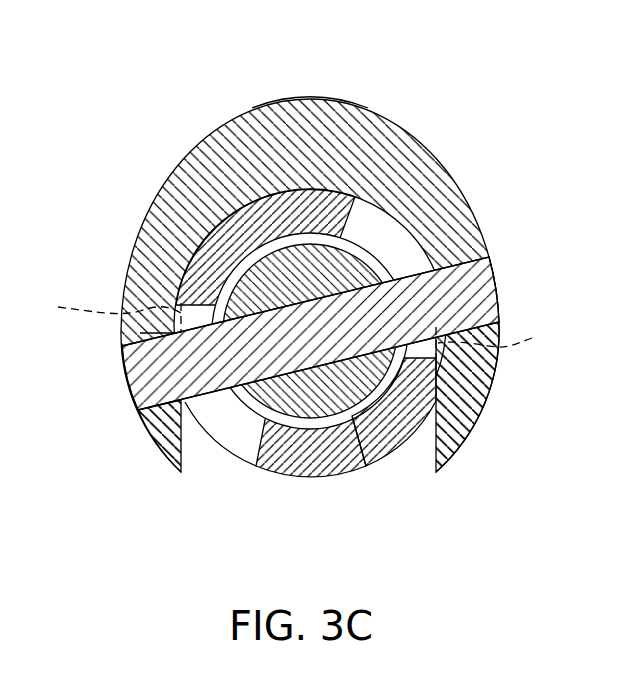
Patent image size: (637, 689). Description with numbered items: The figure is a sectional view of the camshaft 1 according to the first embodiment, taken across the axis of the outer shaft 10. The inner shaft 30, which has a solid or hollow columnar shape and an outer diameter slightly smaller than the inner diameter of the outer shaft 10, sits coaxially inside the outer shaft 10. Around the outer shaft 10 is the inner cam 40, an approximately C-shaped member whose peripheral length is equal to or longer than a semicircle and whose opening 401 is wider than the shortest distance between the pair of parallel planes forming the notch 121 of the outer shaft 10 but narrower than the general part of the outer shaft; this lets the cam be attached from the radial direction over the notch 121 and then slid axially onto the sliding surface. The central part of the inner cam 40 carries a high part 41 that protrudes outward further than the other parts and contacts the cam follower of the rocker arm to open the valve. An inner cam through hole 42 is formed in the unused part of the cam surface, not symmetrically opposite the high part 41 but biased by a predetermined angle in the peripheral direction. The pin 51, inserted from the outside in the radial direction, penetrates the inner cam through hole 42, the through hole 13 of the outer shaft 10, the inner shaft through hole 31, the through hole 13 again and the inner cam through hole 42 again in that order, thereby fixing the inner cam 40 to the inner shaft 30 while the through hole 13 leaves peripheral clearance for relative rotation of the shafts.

The camshaft 1 is at (540, 100).
The outer shaft 10 is at (268, 479).
The through hole 13 is at (345, 218).
The inner shaft 30 is at (372, 420).
The inner shaft through hole 31 is at (306, 362).
The inner cam 40 is at (146, 204).
The high part 41 is at (304, 99).
The inner cam through hole 42 is at (482, 297).
The pin 51 is at (415, 287).
The notch 121 is at (290, 324).
The opening 401 is at (183, 447).